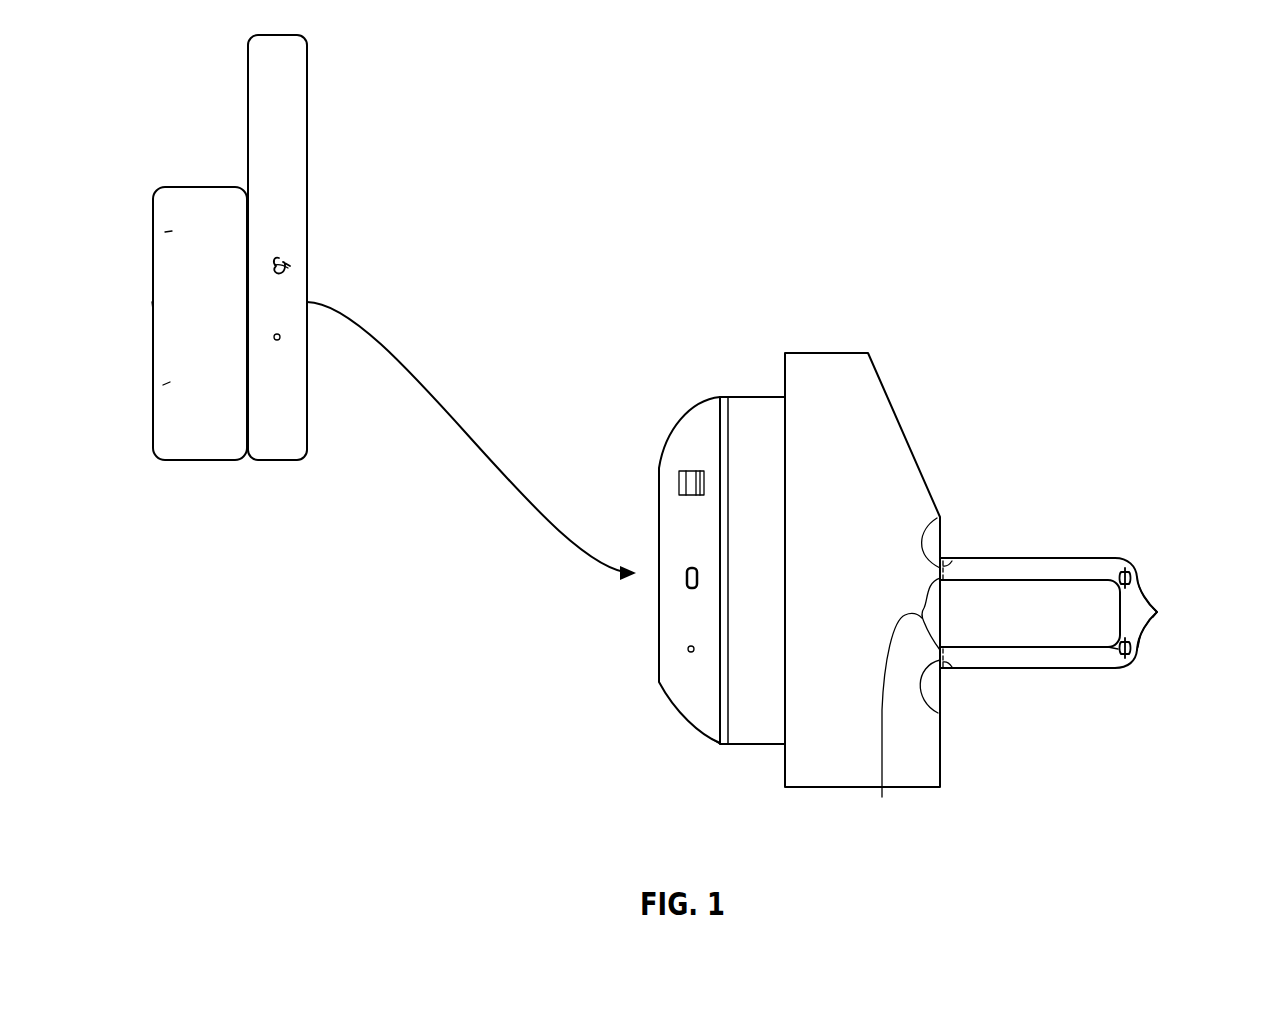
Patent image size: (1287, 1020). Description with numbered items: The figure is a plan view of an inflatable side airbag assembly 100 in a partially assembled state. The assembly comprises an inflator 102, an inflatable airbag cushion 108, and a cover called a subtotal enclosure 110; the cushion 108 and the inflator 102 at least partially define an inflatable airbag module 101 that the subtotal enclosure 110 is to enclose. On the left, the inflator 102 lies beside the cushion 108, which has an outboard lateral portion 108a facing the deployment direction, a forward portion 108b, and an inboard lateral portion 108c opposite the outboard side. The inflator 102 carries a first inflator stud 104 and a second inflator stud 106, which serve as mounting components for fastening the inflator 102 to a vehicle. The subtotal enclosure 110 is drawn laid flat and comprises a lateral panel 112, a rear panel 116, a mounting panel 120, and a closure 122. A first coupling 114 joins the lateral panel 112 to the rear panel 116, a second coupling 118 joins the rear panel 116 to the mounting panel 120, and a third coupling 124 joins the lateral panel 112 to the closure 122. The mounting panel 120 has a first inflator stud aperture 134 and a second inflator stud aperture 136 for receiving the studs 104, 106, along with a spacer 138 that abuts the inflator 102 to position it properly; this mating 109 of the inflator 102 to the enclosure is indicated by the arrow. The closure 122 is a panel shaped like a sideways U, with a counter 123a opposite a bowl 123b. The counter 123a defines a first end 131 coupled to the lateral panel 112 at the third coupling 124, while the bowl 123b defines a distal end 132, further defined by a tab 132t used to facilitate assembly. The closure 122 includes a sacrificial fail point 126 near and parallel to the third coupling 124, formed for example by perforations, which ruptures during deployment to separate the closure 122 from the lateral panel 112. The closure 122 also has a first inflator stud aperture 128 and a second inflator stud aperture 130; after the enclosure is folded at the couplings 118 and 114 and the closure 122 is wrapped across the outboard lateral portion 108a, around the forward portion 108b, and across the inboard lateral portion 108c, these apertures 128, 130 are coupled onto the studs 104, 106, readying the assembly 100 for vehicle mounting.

The inflatable side airbag assembly 100 is at (731, 118).
The inflatable airbag module 101 is at (301, 553).
The inflator 102 is at (308, 116).
The first inflator stud 104 is at (292, 266).
The second inflator stud 106 is at (283, 339).
The inflatable airbag cushion 108 is at (222, 338).
The outboard lateral portion 108a is at (172, 231).
The forward portion 108b is at (152, 302).
The inboard lateral portion 108c is at (170, 382).
The mating 109 is at (400, 341).
The subtotal enclosure 110 is at (967, 254).
The lateral panel 112 is at (890, 402).
The first coupling 114 is at (782, 415).
The rear panel 116 is at (745, 746).
The second coupling 118 is at (718, 744).
The mounting panel 120 is at (668, 697).
The closure 122 is at (1060, 558).
The counter 123a is at (1014, 627).
The bowl 123b is at (1145, 640).
The third coupling 124 is at (937, 518).
The sacrificial fail point 126 is at (952, 561).
The first inflator stud aperture 128 is at (1130, 576).
The second inflator stud aperture 130 is at (1115, 652).
The first end 131 is at (901, 707).
The distal end 132 is at (1145, 600).
The tab 132t is at (1160, 614).
The first inflator stud aperture 134 is at (690, 567).
The second inflator stud aperture 136 is at (688, 648).
The spacer 138 is at (679, 484).